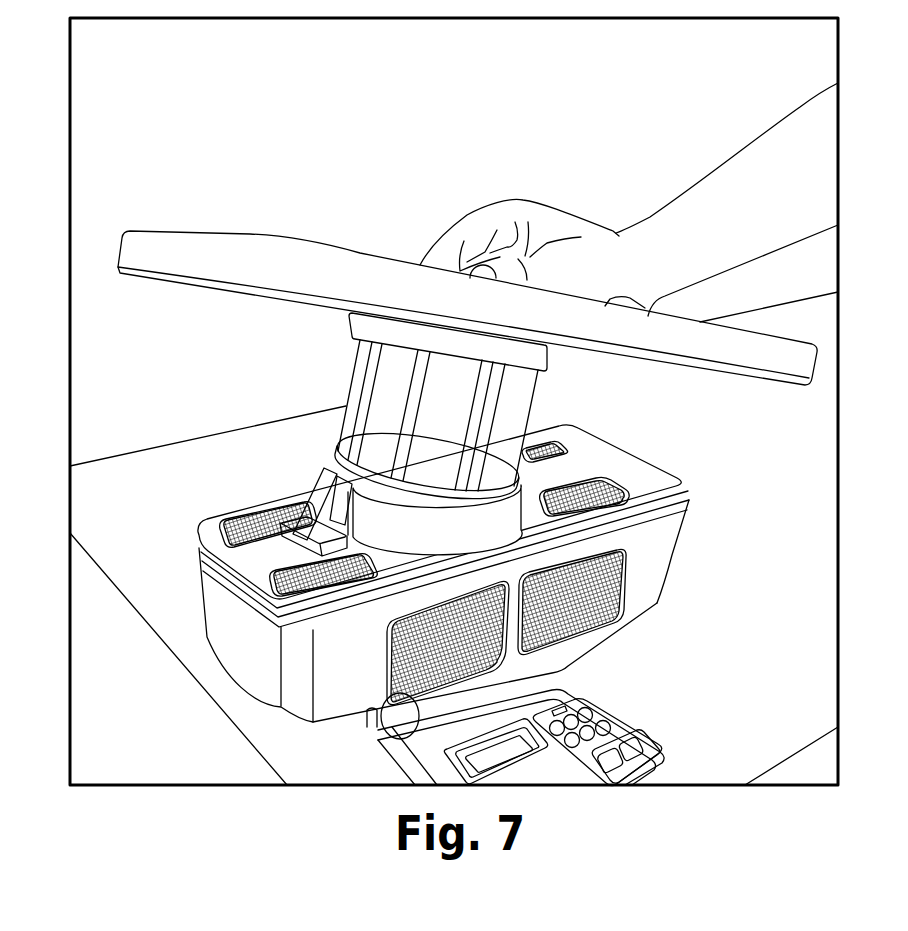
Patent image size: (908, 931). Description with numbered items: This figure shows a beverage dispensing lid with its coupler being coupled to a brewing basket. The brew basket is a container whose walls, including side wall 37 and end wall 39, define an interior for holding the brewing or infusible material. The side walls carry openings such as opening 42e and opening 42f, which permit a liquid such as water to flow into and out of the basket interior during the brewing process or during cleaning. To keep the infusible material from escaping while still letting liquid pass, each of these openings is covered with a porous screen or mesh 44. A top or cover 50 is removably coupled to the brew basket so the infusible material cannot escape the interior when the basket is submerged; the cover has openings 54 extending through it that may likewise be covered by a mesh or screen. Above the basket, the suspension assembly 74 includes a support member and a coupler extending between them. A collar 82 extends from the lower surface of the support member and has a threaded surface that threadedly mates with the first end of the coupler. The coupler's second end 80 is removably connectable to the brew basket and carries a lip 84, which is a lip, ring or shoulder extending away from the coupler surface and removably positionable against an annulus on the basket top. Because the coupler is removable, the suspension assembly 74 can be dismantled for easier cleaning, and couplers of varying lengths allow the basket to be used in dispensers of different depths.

The side wall 37 is at (643, 562).
The end wall 39 is at (217, 613).
The opening 42e is at (573, 612).
The opening 42f is at (375, 727).
The screen or mesh 44 is at (605, 638).
The top or cover 50 is at (657, 504).
The openings 54 is at (636, 490).
The suspension assembly 74 is at (552, 388).
The second end 80 is at (337, 458).
The collar 82 is at (548, 357).
The lip 84 is at (343, 447).